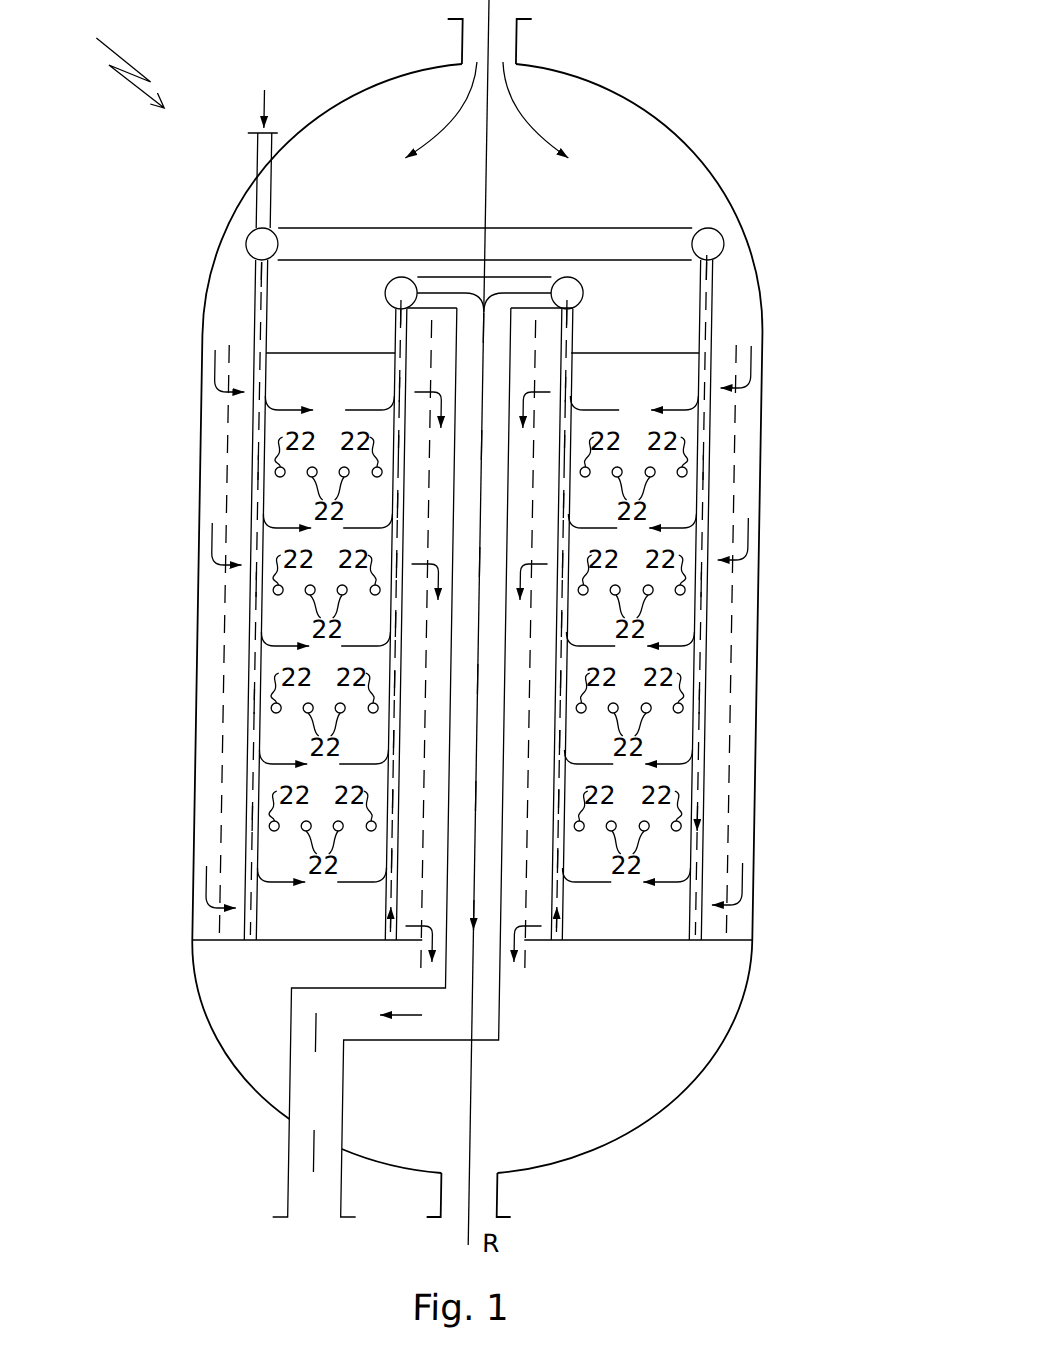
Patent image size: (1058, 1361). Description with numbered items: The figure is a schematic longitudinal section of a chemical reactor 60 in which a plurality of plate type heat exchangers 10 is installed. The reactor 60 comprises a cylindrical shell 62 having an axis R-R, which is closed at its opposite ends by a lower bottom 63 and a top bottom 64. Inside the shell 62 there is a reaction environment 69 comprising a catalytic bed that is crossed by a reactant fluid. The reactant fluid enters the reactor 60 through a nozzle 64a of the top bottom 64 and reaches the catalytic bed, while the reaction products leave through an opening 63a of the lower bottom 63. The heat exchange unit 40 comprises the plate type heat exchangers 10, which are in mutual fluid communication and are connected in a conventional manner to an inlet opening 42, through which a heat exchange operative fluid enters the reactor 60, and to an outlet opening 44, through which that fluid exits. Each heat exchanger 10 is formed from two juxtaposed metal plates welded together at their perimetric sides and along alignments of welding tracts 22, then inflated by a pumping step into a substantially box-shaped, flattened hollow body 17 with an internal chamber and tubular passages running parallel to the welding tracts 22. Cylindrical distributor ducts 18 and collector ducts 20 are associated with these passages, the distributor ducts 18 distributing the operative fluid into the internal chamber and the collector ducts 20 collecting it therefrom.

The chemical reactor 60 is at (312, 83).
The nozzle 64a is at (519, 40).
The top bottom 64 is at (670, 122).
The inlet opening 42 is at (258, 173).
The distributor duct 18 is at (256, 323).
The collector duct 20 is at (401, 333).
The welding tracts 22 is at (478, 653).
The cylindrical shell 62 is at (772, 427).
The heat exchange unit 40 is at (724, 509).
The reaction environment 69 is at (755, 576).
The hollow body 17 is at (301, 628).
The plate type heat exchanger 10 is at (307, 734).
The lower bottom 63 is at (708, 1076).
The outlet opening 44 is at (308, 1160).
The opening 63a is at (517, 1193).